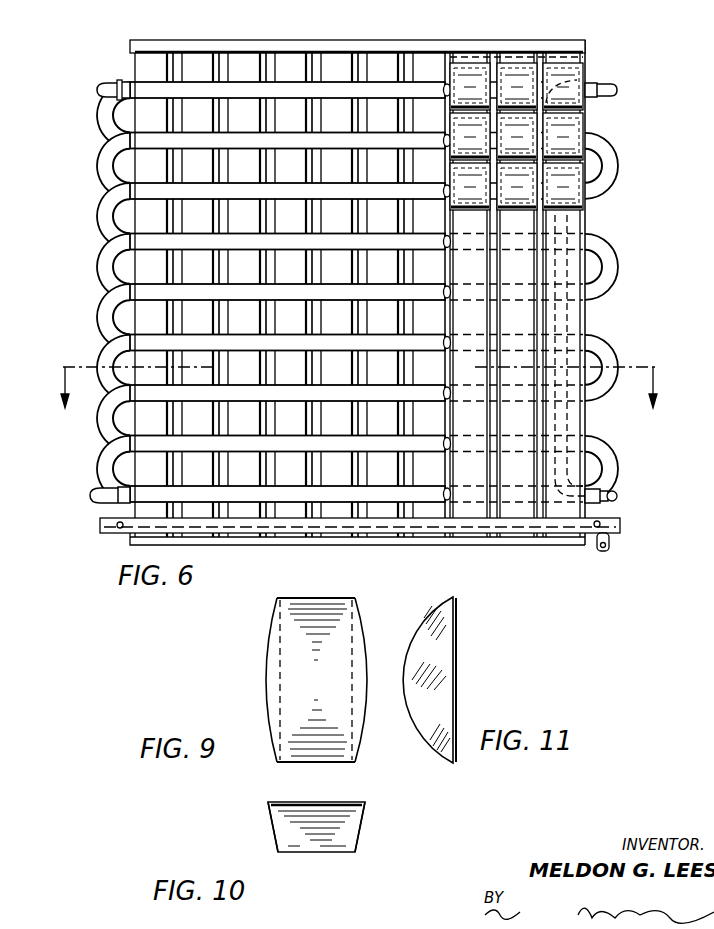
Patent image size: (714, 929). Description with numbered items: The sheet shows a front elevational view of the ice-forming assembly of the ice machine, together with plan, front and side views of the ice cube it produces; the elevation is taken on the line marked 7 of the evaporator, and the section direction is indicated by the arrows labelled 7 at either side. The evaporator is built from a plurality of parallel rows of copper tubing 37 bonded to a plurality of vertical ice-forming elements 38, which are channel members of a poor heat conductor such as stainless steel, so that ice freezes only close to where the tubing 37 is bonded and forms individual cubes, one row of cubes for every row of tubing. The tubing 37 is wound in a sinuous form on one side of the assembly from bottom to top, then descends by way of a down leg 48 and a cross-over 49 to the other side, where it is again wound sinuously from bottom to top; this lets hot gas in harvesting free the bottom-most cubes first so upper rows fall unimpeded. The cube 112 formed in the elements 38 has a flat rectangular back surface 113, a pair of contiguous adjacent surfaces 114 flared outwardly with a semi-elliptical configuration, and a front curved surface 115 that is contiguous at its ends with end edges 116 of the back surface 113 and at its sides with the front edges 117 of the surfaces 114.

In FIG. 6, the section line 7- 7 is at (357, 382).
In FIG. 6, the copper tubing 37 is at (302, 191).
In FIG. 6, the ice-forming elements 38 is at (333, 363).
In FIG. 6, the down leg 48 is at (556, 263).
In FIG. 6, the cross-over 49 is at (618, 494).
In FIG. 6, the cube 112 is at (555, 79).
In FIG. 9, the cube 112 is at (307, 681).
In FIG. 11, the flat rectangular back surface 113 is at (456, 641).
In FIG. 10, the flat rectangular back surface 113 is at (322, 852).
In FIG. 11, the contiguous adjacent surfaces 114 is at (442, 707).
In FIG. 10, the contiguous adjacent surfaces 114 is at (275, 833).
In FIG. 11, the front curved surface 115 is at (416, 628).
In FIG. 10, the front curved surface 115 is at (340, 803).
In FIG. 9, the end edges 116 is at (329, 598).
In FIG. 9, the front edges 117 is at (264, 686).